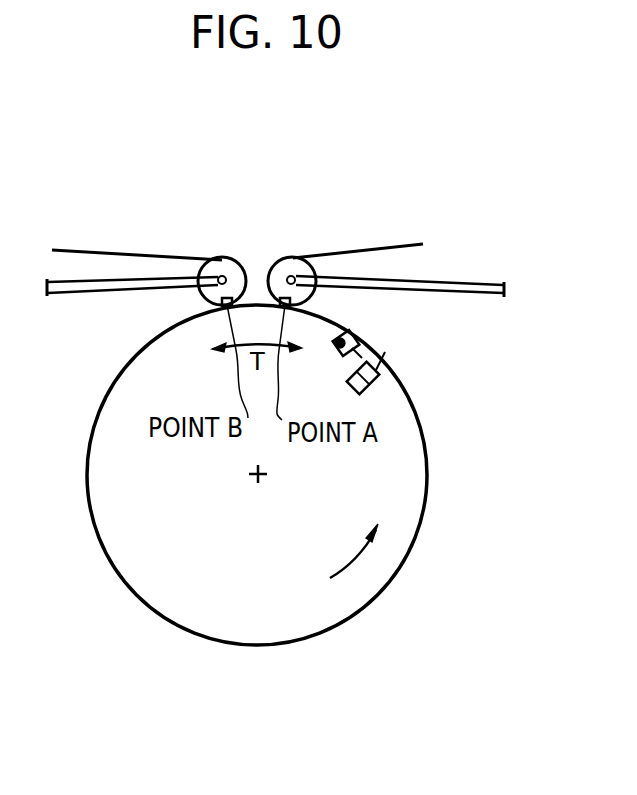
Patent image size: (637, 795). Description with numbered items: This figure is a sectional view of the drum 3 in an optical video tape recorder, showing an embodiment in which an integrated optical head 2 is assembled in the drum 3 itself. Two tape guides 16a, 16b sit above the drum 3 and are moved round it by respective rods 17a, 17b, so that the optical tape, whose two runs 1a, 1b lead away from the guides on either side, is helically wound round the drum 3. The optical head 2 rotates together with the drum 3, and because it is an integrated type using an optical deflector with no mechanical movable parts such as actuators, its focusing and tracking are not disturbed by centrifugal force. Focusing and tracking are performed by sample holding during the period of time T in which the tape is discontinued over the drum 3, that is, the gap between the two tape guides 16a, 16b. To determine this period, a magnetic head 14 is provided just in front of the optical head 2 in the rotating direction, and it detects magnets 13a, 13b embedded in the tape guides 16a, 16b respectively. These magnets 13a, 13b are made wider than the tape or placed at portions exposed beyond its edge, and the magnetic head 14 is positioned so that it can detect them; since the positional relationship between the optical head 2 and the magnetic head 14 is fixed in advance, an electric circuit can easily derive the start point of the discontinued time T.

The first blade 1a is at (92, 250).
The second blade 1b is at (404, 244).
The optical head 2 is at (370, 388).
The drum 3 is at (425, 513).
The magnet 13a is at (222, 306).
The magnet 13b is at (291, 306).
The magnetic head 14 is at (350, 348).
The tape guide 16a is at (220, 262).
The tape guide 16b is at (293, 258).
The rod 17a is at (83, 294).
The rod 17b is at (453, 280).